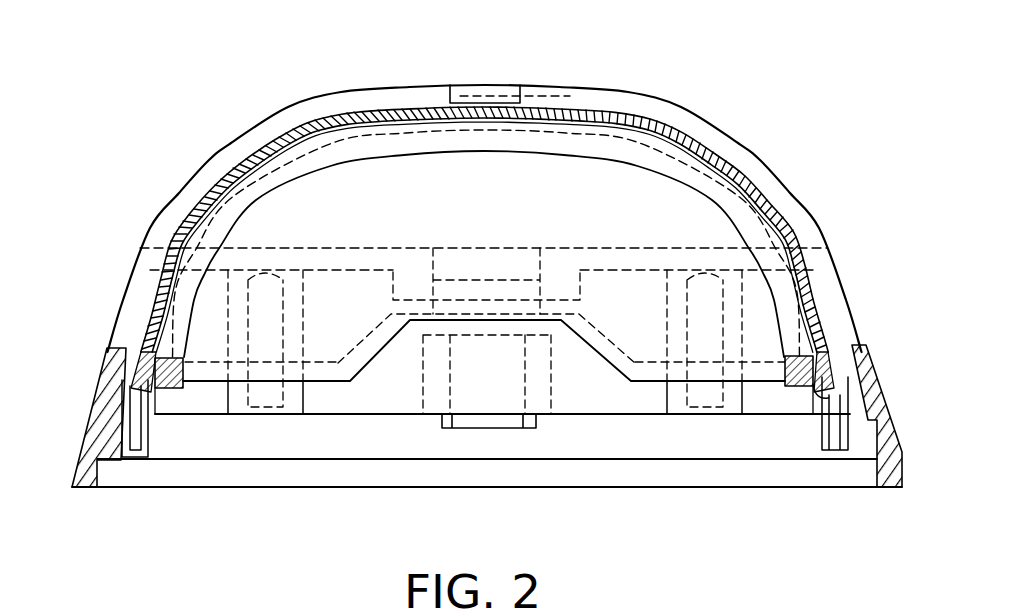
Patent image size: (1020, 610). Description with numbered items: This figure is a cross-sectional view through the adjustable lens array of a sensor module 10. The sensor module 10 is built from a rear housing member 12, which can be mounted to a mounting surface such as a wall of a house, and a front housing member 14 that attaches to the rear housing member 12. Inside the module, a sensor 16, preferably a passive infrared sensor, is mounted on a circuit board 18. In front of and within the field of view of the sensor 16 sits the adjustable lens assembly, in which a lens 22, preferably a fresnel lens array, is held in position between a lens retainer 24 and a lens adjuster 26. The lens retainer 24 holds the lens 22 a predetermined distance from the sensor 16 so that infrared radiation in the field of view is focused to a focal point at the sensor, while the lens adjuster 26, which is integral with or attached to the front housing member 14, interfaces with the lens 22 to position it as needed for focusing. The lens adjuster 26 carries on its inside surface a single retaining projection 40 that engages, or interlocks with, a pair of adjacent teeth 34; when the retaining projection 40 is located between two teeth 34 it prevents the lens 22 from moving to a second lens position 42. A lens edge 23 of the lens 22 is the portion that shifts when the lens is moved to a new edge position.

The sensor module 10 is at (800, 155).
The rear housing member 12 is at (284, 488).
The front housing member 14 is at (893, 423).
The sensor 16 is at (488, 430).
The circuit board 18 is at (370, 416).
The lens 22 is at (678, 100).
The lens edge 23 is at (131, 424).
The lens retainer 24 is at (169, 392).
The lens adjuster 26 is at (98, 412).
The teeth 34 is at (437, 99).
The retaining projection 40 is at (570, 94).
The second lens position 42 is at (172, 357).